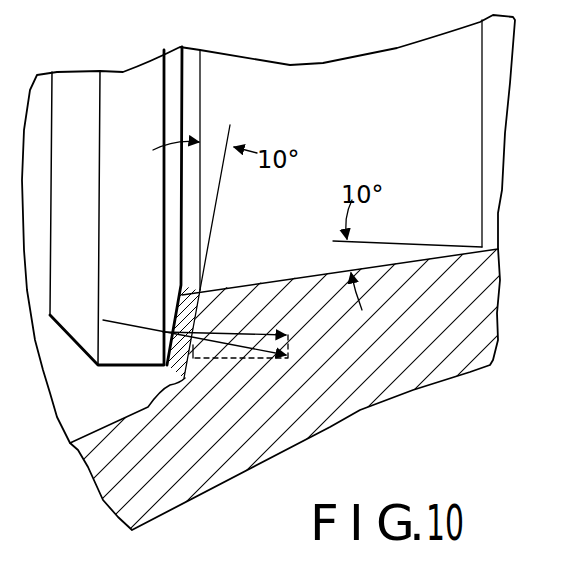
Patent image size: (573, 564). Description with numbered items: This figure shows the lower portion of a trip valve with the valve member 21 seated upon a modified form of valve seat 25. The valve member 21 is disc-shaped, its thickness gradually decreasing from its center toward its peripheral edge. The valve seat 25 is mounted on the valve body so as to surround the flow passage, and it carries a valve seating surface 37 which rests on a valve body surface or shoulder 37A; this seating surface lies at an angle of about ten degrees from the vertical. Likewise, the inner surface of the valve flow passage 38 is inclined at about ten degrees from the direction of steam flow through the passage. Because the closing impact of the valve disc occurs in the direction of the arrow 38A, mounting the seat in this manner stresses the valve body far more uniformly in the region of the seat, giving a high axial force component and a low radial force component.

The valve member 21 is at (120, 65).
The valve seat 25 is at (149, 404).
The valve seating surface 37 is at (182, 298).
The valve body surface or shoulder 37A is at (198, 312).
The inner surface of the valve flow passage 38 is at (318, 274).
The direction of closing impact 38A is at (133, 327).